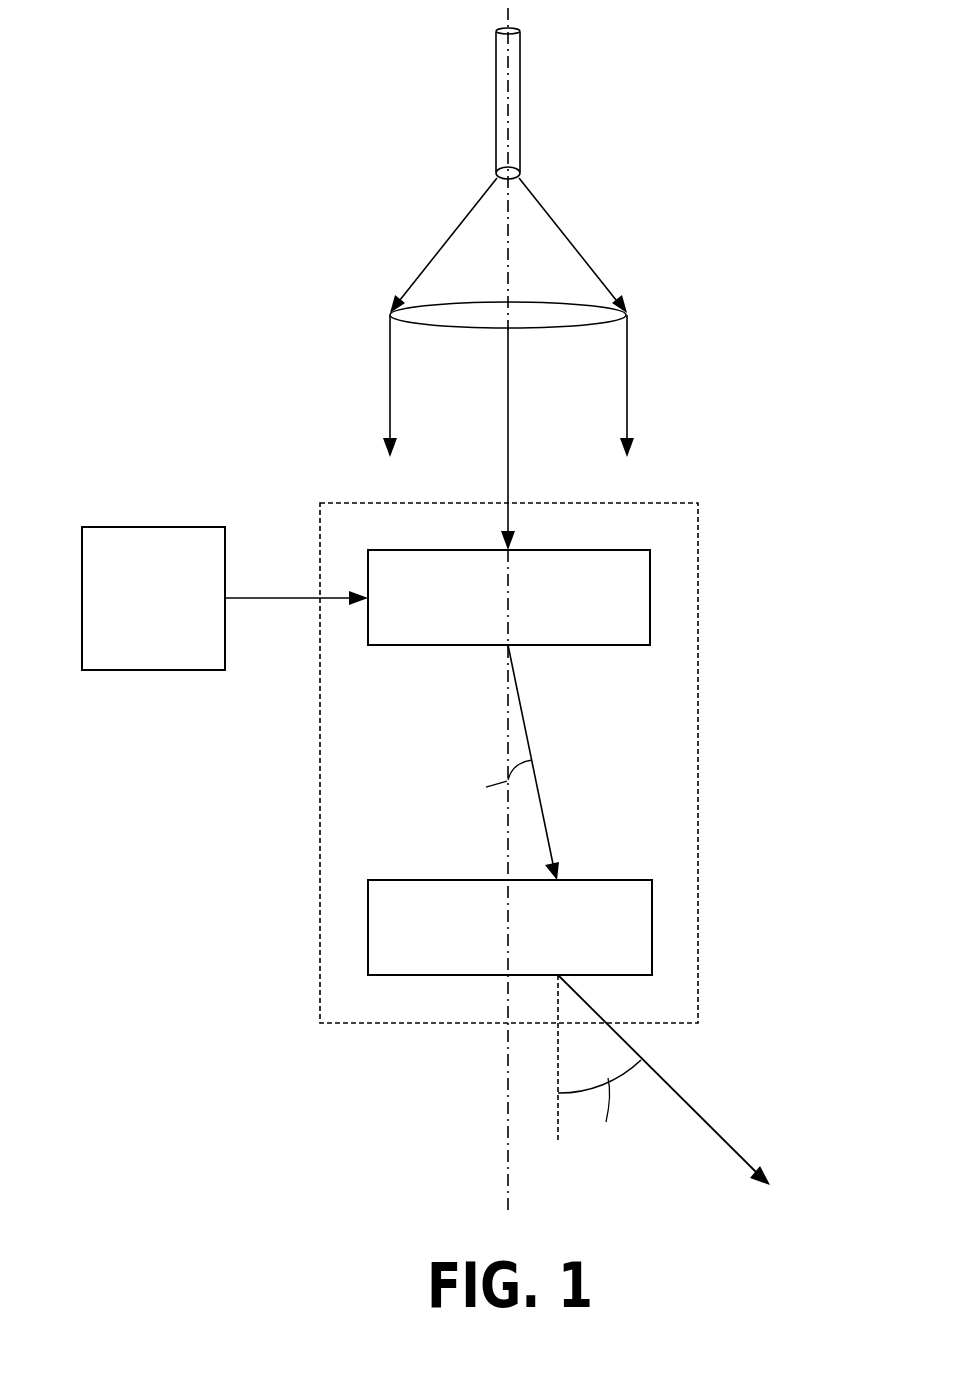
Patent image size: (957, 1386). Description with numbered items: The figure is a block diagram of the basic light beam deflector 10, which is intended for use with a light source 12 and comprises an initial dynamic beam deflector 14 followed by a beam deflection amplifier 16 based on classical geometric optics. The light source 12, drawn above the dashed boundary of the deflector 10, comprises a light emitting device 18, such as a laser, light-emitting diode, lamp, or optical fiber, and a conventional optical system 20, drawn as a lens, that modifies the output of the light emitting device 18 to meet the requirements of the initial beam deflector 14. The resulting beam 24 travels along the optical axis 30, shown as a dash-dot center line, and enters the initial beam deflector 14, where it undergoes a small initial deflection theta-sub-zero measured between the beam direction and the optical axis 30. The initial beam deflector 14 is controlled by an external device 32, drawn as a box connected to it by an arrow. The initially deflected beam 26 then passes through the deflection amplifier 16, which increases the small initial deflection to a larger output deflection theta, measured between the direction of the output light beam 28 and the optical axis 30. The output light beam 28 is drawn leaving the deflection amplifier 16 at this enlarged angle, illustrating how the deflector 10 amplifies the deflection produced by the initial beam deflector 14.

The light beam deflector 10 is at (712, 540).
The light source 12 is at (402, 214).
The initial dynamic beam deflector 14 is at (604, 550).
The beam deflection amplifier 16 is at (626, 880).
The light emitting device 18 is at (520, 126).
The conventional optical system 20 is at (630, 315).
The beam 24 is at (510, 432).
The initially deflected beam 26 is at (546, 820).
The output light beam 28 is at (700, 1117).
The optical axis 30 is at (507, 1138).
The controller 32 is at (225, 598).